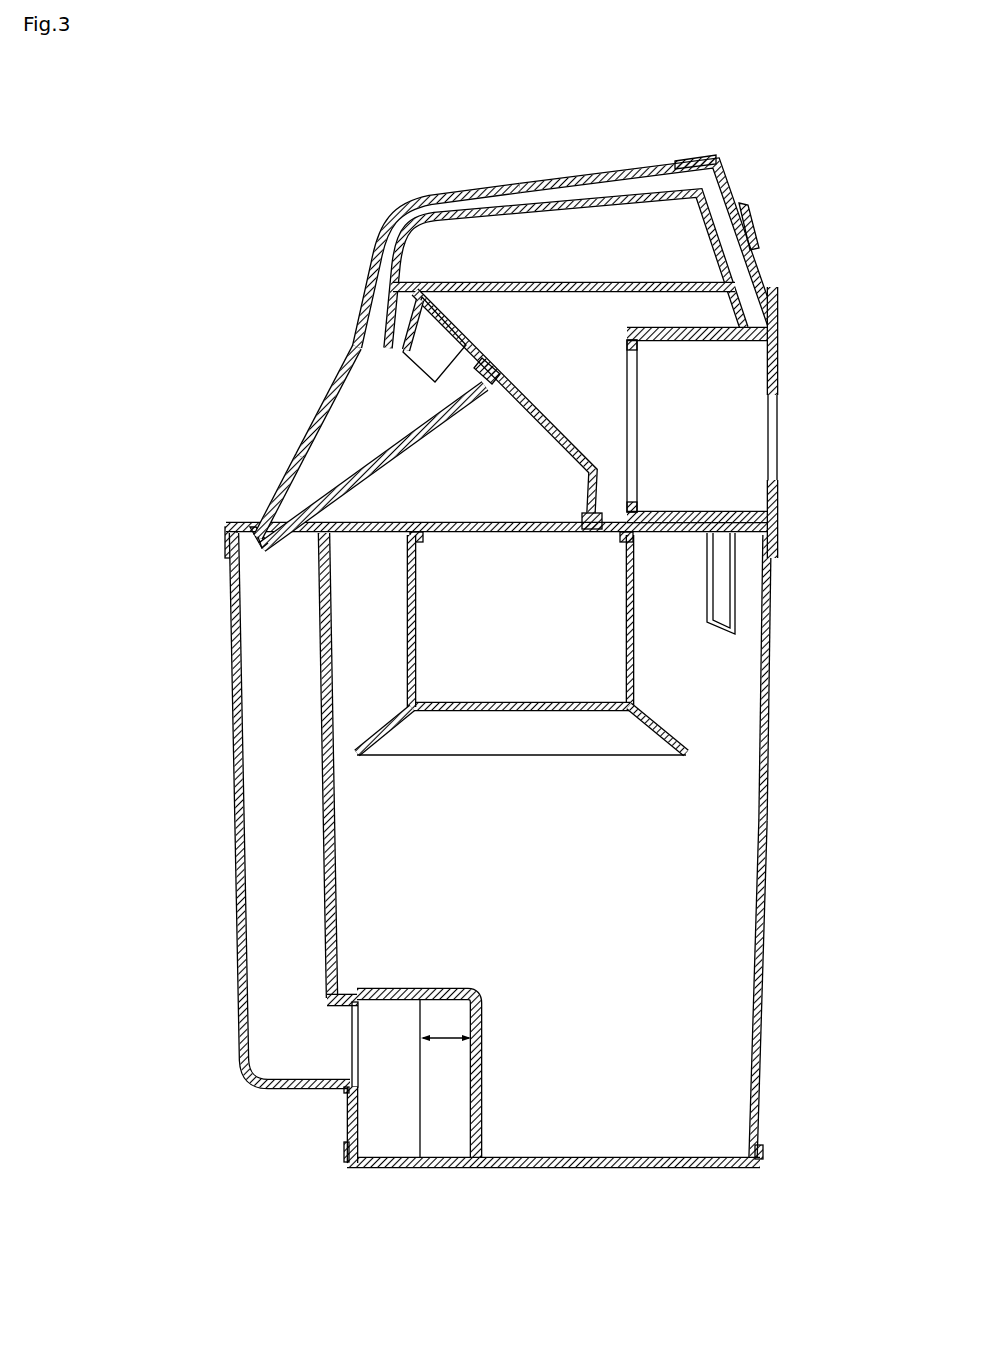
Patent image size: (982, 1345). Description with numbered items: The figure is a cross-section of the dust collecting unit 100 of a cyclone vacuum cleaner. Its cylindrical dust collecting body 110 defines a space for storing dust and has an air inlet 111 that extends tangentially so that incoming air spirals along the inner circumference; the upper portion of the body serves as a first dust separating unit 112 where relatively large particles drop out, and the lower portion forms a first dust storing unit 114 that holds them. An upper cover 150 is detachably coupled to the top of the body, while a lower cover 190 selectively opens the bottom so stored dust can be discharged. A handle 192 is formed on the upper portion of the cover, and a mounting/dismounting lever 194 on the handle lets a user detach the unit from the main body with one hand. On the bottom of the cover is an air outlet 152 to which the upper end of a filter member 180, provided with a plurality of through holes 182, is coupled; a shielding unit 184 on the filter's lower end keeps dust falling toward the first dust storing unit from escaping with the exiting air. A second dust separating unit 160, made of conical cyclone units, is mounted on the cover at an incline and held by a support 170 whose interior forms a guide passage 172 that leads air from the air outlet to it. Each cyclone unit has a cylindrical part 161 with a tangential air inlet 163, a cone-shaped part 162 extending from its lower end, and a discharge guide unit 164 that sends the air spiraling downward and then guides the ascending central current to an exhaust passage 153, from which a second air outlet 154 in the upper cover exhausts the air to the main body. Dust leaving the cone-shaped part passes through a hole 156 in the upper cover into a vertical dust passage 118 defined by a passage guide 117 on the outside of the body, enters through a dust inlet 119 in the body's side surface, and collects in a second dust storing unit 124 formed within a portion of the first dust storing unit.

The dust collecting unit 100 is at (124, 229).
The dust collecting body 110 is at (790, 790).
The air inlet 111 is at (725, 588).
The first dust separating unit 112 is at (754, 638).
The first dust storing unit 114 is at (656, 1031).
The passage guide 117 is at (242, 1006).
The dust passage 118 is at (243, 918).
The dust inlet 119 is at (356, 1040).
The second dust storing unit 124 is at (383, 1134).
The upper cover 150 is at (225, 545).
The air outlet 152 is at (544, 533).
The exhaust passage 153 is at (596, 318).
The air outlet 154 is at (779, 440).
The hole 156 is at (250, 527).
The second dust separating unit 160 is at (321, 374).
The cylindrical part 161 is at (367, 332).
The cone-shaped part 162 is at (290, 472).
The air inlet 163 is at (462, 395).
The discharge guide unit 164 is at (395, 315).
The support 170 is at (373, 473).
The guide passage 172 is at (532, 450).
The filter member 180 is at (653, 643).
The through holes 182 is at (408, 646).
The shielding unit 184 is at (675, 735).
The lower cover 190 is at (762, 1157).
The handle 192 is at (625, 172).
The mounting/dismounting lever 194 is at (694, 160).